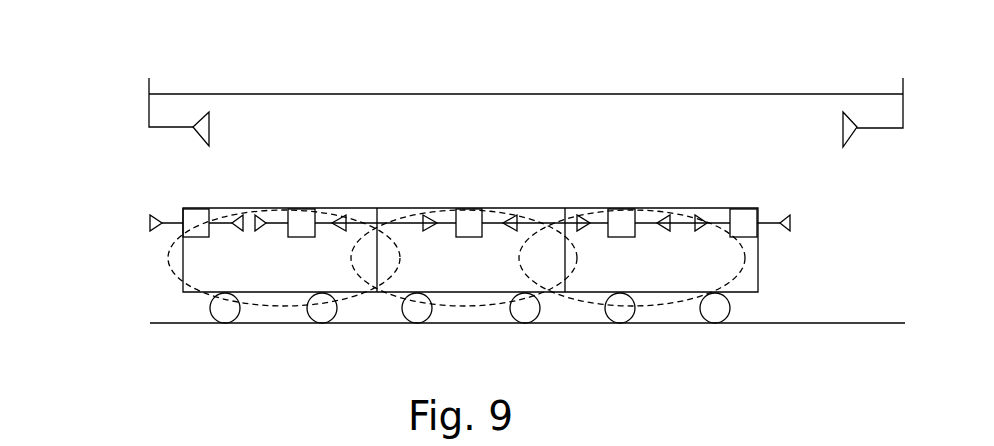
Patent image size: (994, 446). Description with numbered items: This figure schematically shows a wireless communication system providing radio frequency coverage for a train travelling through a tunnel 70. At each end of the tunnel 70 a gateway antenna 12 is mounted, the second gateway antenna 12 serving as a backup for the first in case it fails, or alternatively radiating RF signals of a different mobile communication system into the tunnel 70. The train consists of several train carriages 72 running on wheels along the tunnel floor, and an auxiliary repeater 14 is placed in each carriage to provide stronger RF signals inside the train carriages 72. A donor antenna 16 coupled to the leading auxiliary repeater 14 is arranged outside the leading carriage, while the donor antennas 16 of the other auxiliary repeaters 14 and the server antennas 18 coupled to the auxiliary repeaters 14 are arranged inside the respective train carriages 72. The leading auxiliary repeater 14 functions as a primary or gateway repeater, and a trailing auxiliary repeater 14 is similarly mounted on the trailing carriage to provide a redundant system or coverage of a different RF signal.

The tunnel 70 is at (100, 177).
The gateway antenna 12 is at (195, 127).
The auxiliary repeater 14 is at (297, 208).
The donor antenna 16 is at (331, 222).
The server antenna 18 is at (277, 221).
The train carriage 72 is at (267, 292).